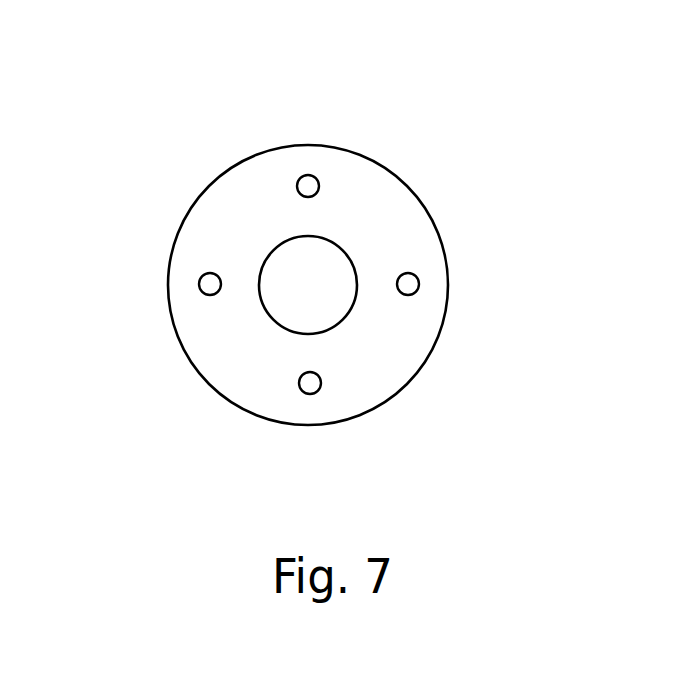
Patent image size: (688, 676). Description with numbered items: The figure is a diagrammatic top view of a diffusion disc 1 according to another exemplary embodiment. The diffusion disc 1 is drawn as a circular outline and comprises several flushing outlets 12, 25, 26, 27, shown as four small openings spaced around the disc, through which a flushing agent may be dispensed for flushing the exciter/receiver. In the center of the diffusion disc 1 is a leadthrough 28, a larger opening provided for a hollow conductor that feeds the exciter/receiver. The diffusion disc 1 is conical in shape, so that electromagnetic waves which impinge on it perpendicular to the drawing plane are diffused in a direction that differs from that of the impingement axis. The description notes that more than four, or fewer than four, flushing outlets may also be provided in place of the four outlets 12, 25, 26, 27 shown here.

The diffusion disc 1 is at (237, 193).
The flushing outlet 12 is at (305, 175).
The flushing outlet 25 is at (203, 293).
The flushing outlet 26 is at (320, 390).
The flushing outlet 27 is at (420, 287).
The leadthrough 28 is at (320, 260).